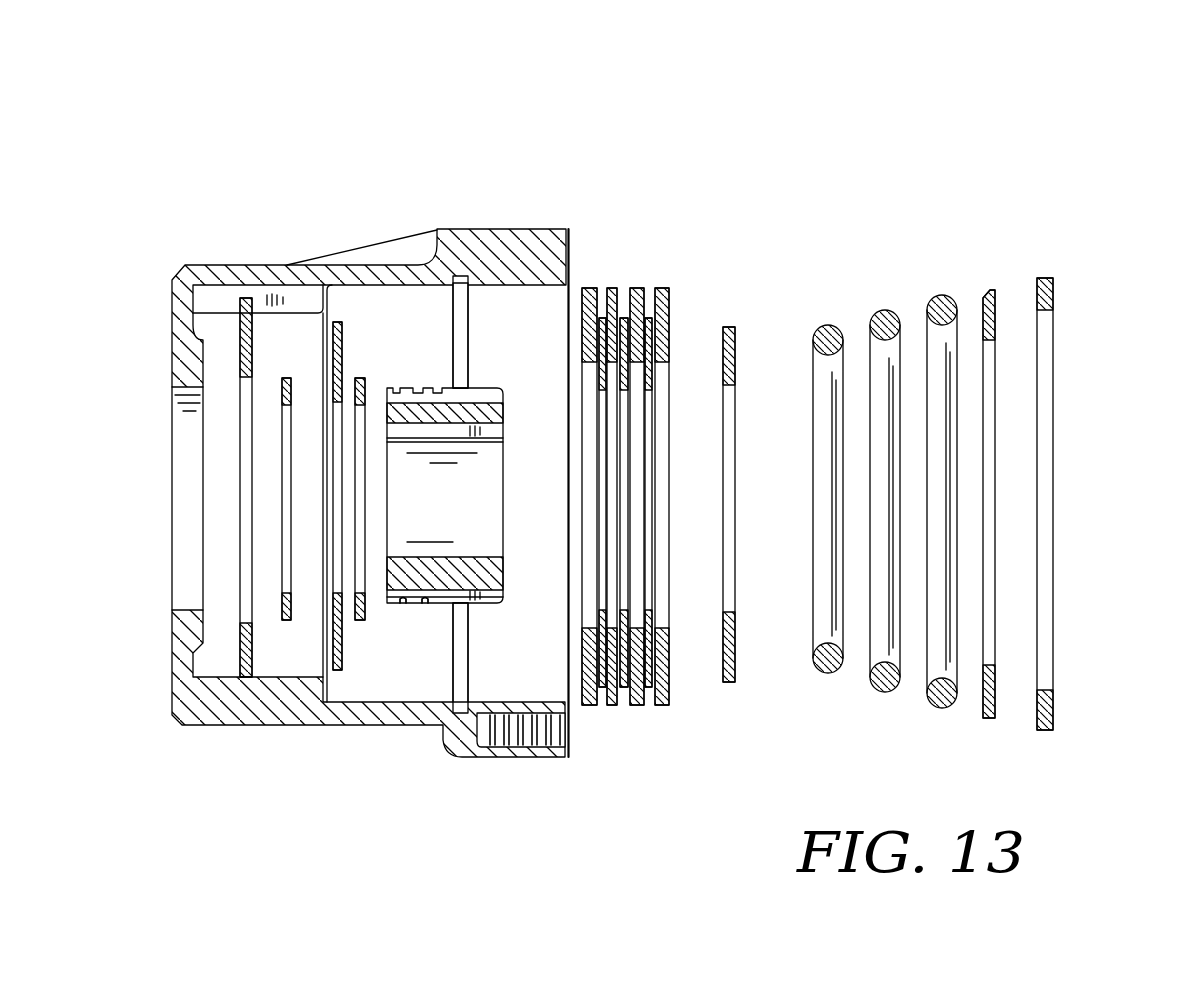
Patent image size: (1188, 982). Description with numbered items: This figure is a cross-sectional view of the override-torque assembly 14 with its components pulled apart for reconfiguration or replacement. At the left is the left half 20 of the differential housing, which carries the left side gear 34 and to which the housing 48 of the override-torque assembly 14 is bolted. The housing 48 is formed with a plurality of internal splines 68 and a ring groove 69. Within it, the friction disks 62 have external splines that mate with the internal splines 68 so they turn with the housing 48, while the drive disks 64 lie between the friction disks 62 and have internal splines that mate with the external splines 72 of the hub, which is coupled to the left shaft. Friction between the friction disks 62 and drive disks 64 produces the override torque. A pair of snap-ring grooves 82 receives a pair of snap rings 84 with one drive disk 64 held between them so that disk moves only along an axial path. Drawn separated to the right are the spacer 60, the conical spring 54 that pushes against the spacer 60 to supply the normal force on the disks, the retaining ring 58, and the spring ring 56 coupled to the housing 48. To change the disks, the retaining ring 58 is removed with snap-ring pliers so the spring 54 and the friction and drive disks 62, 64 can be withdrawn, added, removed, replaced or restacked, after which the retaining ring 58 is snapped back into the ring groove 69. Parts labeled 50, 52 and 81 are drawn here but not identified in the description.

The override-torque assembly 14 is at (1060, 160).
The left half 20 is at (513, 228).
The left side gear 34 is at (540, 300).
The housing 48 is at (331, 247).
The inner housing 50 is at (367, 296).
The outer wall 52 is at (188, 600).
The conical spring 54 is at (894, 294).
The spring ring 56 is at (460, 280).
The retaining ring 58 is at (993, 290).
The spacer 60 is at (736, 348).
The friction disks 62 is at (251, 358).
The drive disks 64 is at (342, 652).
The internal splines 68 is at (207, 303).
The ring groove 69 is at (464, 306).
The external splines 72 is at (476, 393).
The spring washer 81 is at (282, 394).
The snap-ring grooves 82 is at (425, 604).
The snap rings 84 is at (366, 381).